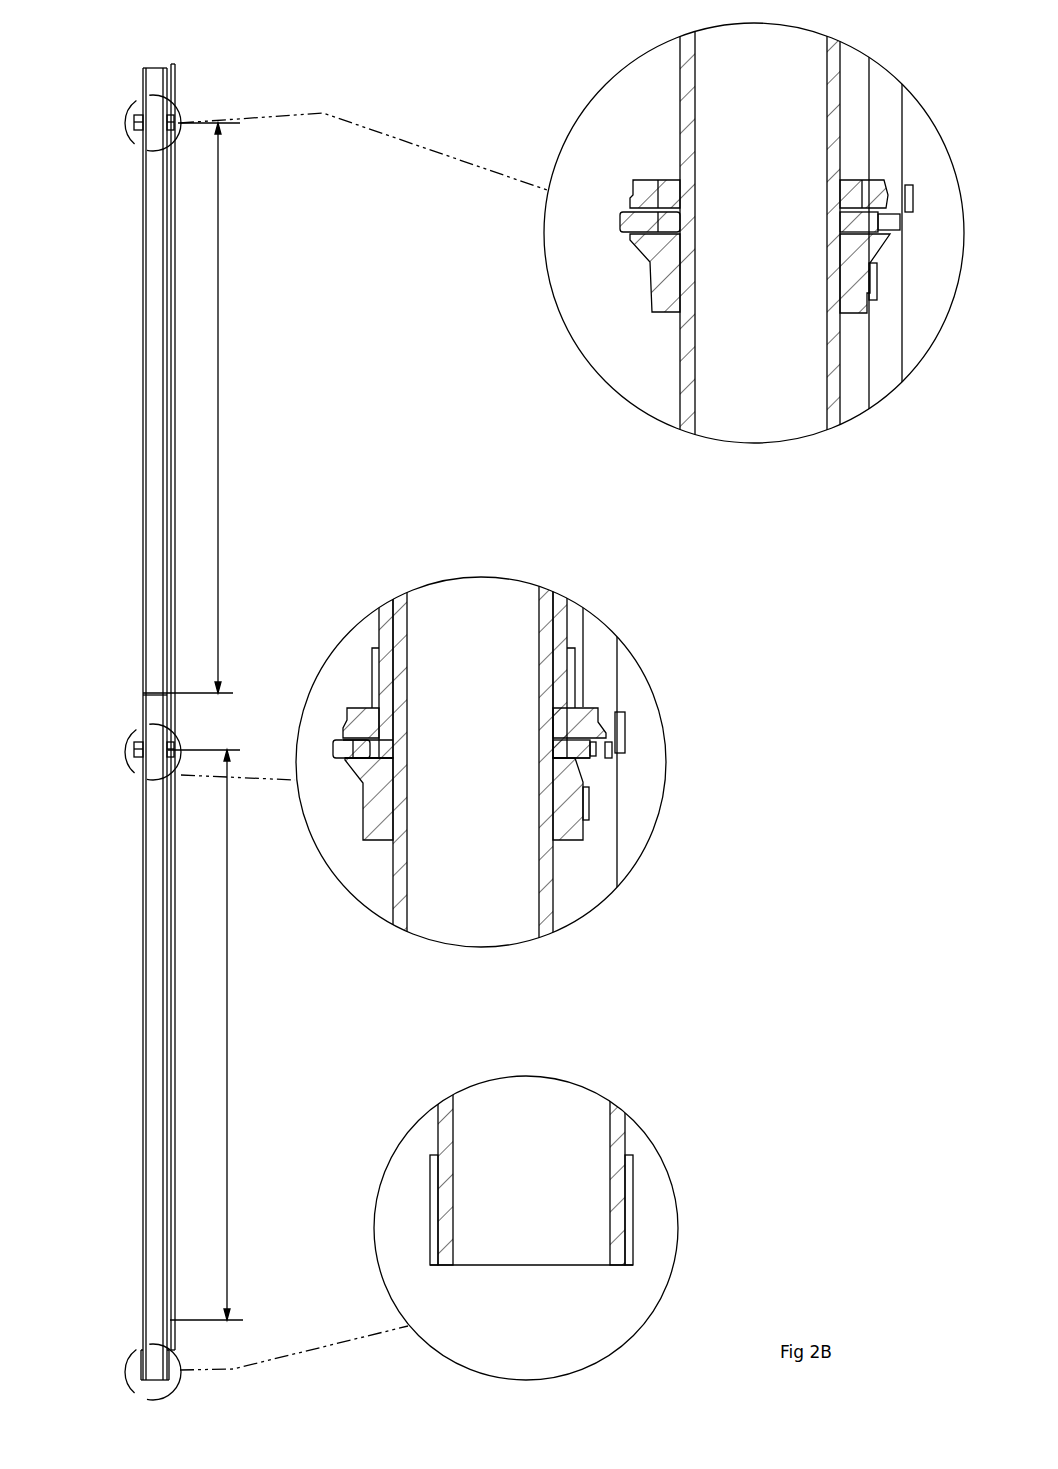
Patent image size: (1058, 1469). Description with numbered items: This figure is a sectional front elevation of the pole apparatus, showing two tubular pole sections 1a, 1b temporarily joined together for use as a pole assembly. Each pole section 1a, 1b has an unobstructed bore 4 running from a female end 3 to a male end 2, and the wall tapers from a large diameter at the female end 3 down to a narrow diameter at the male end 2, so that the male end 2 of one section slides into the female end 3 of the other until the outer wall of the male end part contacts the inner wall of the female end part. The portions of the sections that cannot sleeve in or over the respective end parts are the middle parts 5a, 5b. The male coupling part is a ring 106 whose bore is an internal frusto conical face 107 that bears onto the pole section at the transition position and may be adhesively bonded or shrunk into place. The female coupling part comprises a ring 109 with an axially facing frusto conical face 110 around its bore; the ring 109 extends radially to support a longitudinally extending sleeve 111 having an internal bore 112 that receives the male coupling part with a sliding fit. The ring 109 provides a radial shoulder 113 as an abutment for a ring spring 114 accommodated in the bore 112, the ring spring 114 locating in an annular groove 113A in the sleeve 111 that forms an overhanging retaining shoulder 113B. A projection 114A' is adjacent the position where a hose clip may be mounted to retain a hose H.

The pole section 1a is at (107, 1037).
The pole section 1b is at (112, 381).
The male end 2 is at (137, 688).
The female end 3 is at (387, 757).
The bore 4 is at (649, 235).
The middle part 5a is at (205, 1035).
The middle part 5b is at (191, 408).
The ring 106 is at (372, 648).
The internal frusto conical face 107 is at (483, 1216).
The ring 109 is at (653, 316).
The frusto conical face 110 is at (518, 800).
The sleeve 111 is at (607, 742).
The internal bore 112 is at (562, 713).
The radial shoulder 113 is at (518, 800).
The annular groove 113A is at (618, 750).
The overhanging retaining shoulder 113B is at (598, 738).
The ring spring 114 is at (593, 743).
The projection 114A' is at (698, 729).
The hose H is at (618, 828).